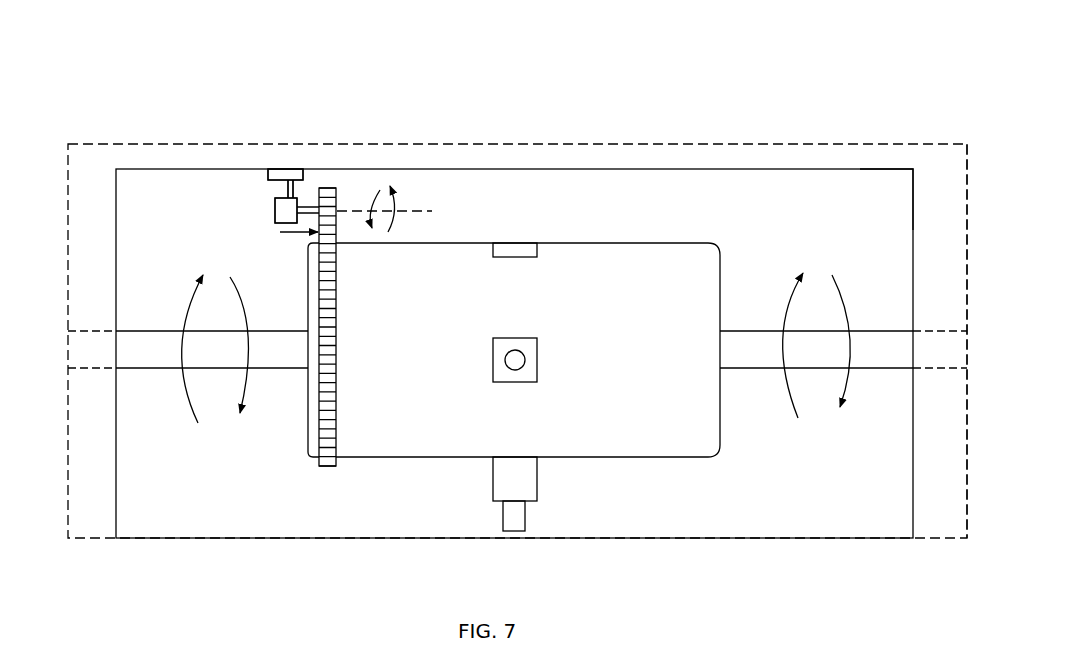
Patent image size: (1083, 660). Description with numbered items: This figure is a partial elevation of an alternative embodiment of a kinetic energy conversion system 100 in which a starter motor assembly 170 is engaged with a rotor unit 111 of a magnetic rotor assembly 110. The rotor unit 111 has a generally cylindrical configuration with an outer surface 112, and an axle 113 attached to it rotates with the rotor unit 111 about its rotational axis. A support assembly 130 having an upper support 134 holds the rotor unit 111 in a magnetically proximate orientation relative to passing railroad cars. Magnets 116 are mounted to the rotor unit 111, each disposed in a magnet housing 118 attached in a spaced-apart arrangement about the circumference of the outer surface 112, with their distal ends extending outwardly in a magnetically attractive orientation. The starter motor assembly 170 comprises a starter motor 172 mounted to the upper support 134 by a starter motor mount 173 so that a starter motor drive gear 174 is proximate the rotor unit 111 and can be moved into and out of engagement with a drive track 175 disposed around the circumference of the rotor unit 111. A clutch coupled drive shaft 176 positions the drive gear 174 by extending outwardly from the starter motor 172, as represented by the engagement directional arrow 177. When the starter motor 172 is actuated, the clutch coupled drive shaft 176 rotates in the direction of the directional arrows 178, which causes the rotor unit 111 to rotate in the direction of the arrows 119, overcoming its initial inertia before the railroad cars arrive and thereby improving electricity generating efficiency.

The kinetic energy conversion system 100 is at (893, 85).
The magnetic rotor assembly 110 is at (654, 193).
The rotor unit 111 is at (690, 243).
The outer surface 112 is at (585, 312).
The axle 113 is at (155, 368).
The magnet 116 is at (525, 513).
The magnet housing 118 is at (537, 473).
The arrows 119 is at (195, 412).
The support assembly 130 is at (945, 182).
The upper support 134 is at (915, 169).
The starter motor assembly 170 is at (282, 155).
The starter motor 172 is at (275, 208).
The starter motor mount 173 is at (280, 187).
The starter motor drive gear 174 is at (337, 197).
The drive track 175 is at (336, 295).
The clutch coupled drive shaft 176 is at (308, 205).
The engagement directional arrow 177 is at (293, 232).
The directional arrows 178 is at (394, 203).